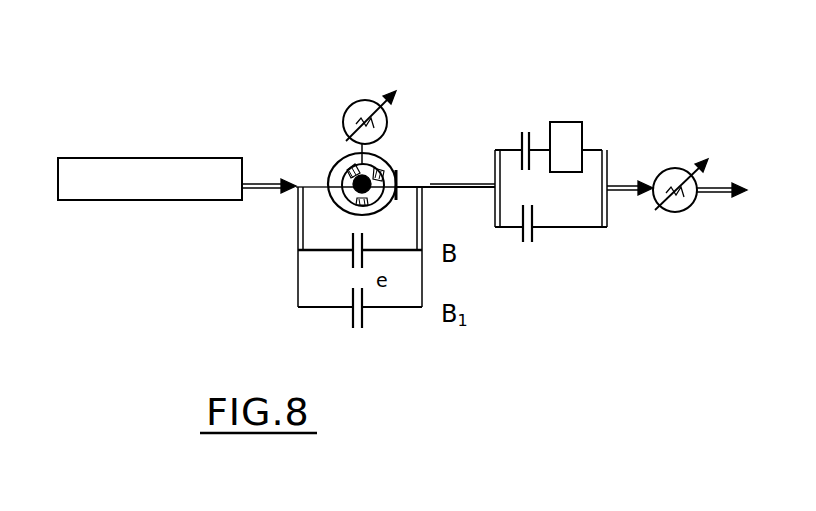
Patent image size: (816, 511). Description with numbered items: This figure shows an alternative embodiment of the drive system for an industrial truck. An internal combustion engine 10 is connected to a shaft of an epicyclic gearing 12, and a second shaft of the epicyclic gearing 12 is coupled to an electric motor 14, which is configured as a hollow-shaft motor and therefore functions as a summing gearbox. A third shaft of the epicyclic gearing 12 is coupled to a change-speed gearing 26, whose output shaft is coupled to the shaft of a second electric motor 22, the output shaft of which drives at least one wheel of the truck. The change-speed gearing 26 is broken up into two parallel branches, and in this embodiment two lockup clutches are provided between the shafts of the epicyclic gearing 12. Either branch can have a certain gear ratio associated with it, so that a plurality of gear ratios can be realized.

The internal combustion engine 10 is at (130, 165).
The epicyclic gearing 12 is at (385, 160).
The electric motor 14 is at (360, 105).
The second electric motor 22 is at (672, 175).
The change-speed gearing 26 is at (593, 240).